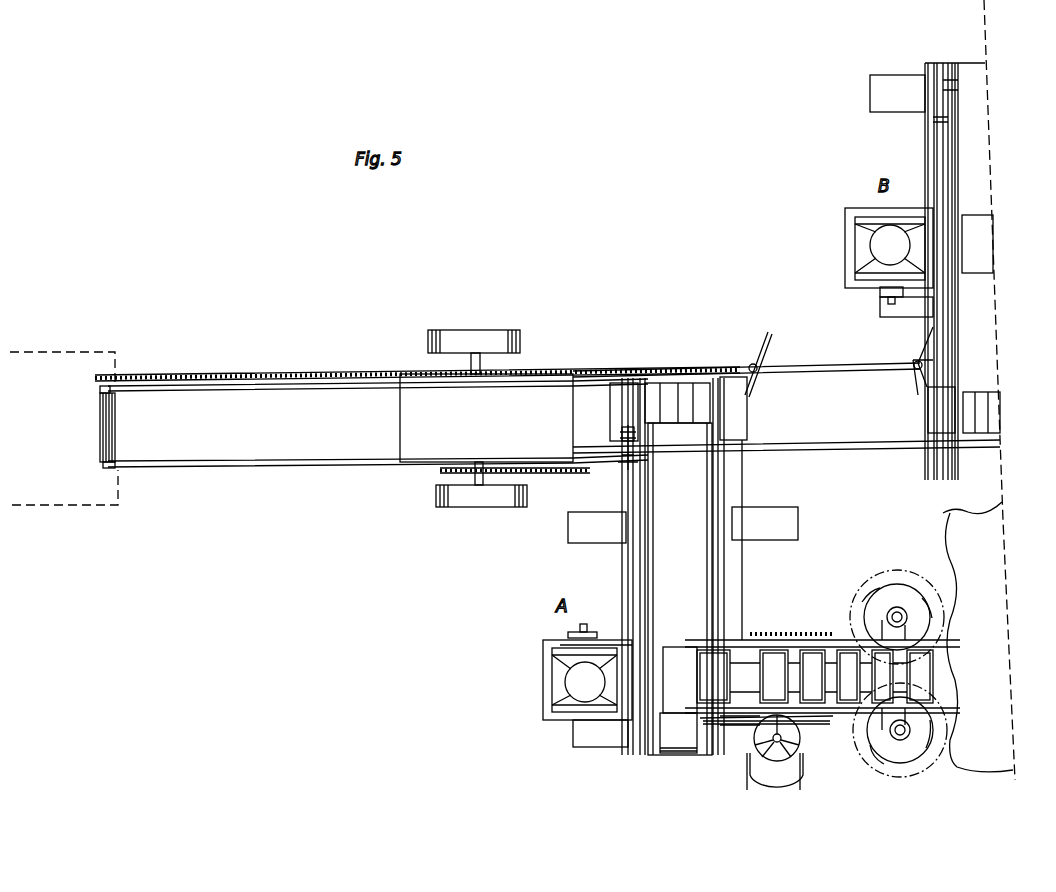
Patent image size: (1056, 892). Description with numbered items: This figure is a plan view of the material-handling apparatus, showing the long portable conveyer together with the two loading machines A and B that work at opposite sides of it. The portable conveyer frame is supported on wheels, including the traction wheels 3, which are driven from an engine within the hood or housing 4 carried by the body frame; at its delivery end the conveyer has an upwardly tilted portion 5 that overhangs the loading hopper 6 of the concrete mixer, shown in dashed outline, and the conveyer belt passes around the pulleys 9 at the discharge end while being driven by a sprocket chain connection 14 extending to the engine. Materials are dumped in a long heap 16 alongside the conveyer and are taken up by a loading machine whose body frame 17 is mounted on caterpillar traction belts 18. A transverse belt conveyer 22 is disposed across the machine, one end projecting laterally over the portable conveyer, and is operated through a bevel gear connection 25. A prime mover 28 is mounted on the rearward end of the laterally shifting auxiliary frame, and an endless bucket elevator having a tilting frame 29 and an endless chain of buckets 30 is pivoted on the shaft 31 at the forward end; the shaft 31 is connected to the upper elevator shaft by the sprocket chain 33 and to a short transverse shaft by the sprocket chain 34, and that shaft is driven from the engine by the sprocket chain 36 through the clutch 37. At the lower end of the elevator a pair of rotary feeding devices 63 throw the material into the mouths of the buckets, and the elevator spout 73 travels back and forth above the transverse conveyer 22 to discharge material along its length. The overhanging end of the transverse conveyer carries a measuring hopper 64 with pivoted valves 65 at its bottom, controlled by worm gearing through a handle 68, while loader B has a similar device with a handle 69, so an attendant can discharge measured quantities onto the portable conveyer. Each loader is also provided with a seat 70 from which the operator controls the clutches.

The wheels 3 is at (495, 330).
The hood or housing 4 is at (552, 380).
The upwardly tilted portion 5 is at (268, 466).
The loading hopper 6 is at (60, 355).
The pulleys 9 is at (100, 388).
The sprocket chain connection 14 is at (262, 373).
The heap or pile 16 is at (952, 515).
The body frame 17 is at (631, 766).
The caterpillar traction belts 18 is at (787, 518).
The transverse belt conveyer 22 is at (700, 473).
The bevel gear connection 25 is at (628, 448).
The internal combustion engine or prime mover 28 is at (880, 246).
The tilting frame 29 is at (849, 712).
The buckets 30 is at (830, 645).
The shaft 31 is at (815, 724).
The sprocket chain 33 is at (720, 727).
The sprocket chain 34 is at (768, 640).
The sprocket chain 36 is at (606, 645).
The clutch 37 is at (880, 292).
The rotary feeding devices 63 is at (888, 600).
The hopper 64 is at (618, 392).
The pivoted valves 65 is at (680, 385).
The handle 68 is at (762, 352).
The handle 69 is at (923, 343).
The seat 70 is at (752, 782).
The spout 73 is at (972, 222).